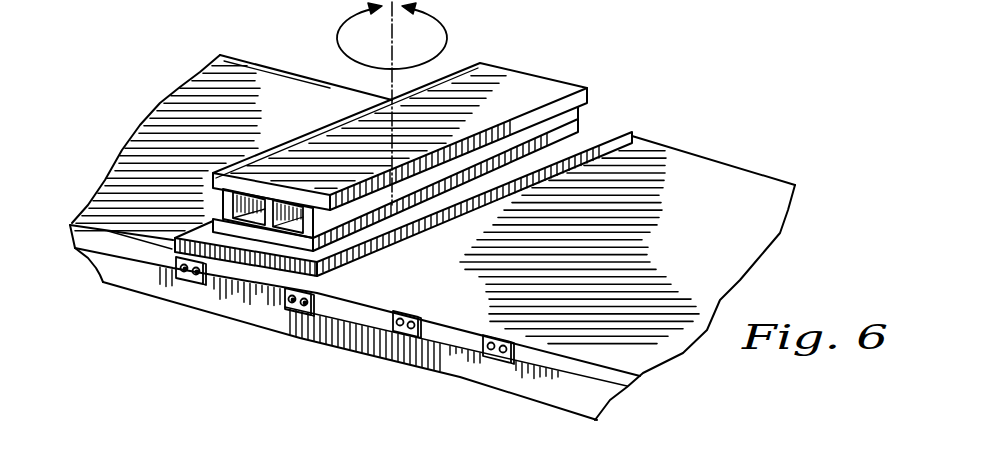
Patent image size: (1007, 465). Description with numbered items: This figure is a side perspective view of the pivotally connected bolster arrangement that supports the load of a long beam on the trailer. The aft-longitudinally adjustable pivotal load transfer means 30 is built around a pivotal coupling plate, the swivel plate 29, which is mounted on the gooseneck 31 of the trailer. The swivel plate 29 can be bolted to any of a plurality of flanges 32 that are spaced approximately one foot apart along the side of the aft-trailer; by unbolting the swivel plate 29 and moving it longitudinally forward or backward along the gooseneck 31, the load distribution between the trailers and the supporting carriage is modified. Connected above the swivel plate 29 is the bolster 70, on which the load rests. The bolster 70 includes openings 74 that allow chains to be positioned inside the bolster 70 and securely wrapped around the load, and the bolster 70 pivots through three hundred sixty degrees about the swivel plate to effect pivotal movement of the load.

The swivel plate 29 is at (634, 132).
The load transfer means 30 is at (608, 92).
The gooseneck 31 is at (700, 176).
The flanges 32 is at (292, 301).
The bolster 70 is at (537, 88).
The openings 74 is at (279, 204).